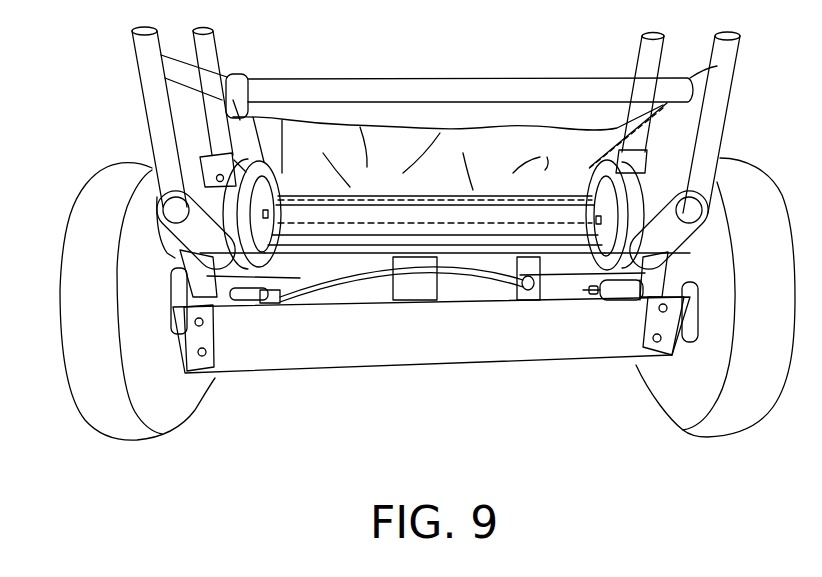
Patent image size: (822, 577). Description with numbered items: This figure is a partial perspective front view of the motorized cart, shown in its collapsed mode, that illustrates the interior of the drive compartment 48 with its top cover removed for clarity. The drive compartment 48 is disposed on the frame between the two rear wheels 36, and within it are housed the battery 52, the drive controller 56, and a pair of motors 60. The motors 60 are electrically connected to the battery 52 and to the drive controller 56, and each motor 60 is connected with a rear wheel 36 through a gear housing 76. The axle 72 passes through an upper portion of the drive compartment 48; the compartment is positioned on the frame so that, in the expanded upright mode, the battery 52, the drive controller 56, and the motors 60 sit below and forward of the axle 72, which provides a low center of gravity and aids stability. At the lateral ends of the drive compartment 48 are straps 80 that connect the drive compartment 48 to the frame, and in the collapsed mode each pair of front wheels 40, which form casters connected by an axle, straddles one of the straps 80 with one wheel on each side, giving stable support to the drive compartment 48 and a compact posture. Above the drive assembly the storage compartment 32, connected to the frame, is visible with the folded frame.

The storage compartment 32 is at (473, 137).
The rear wheels 36 is at (132, 440).
The front wheels 40 is at (260, 160).
The drive compartment 48 is at (305, 370).
The battery 52 is at (357, 303).
The drive controller 56 is at (527, 283).
The motors 60 is at (285, 283).
The axle 72 is at (353, 235).
The gear housing 76 is at (167, 298).
The strap 80 is at (183, 353).